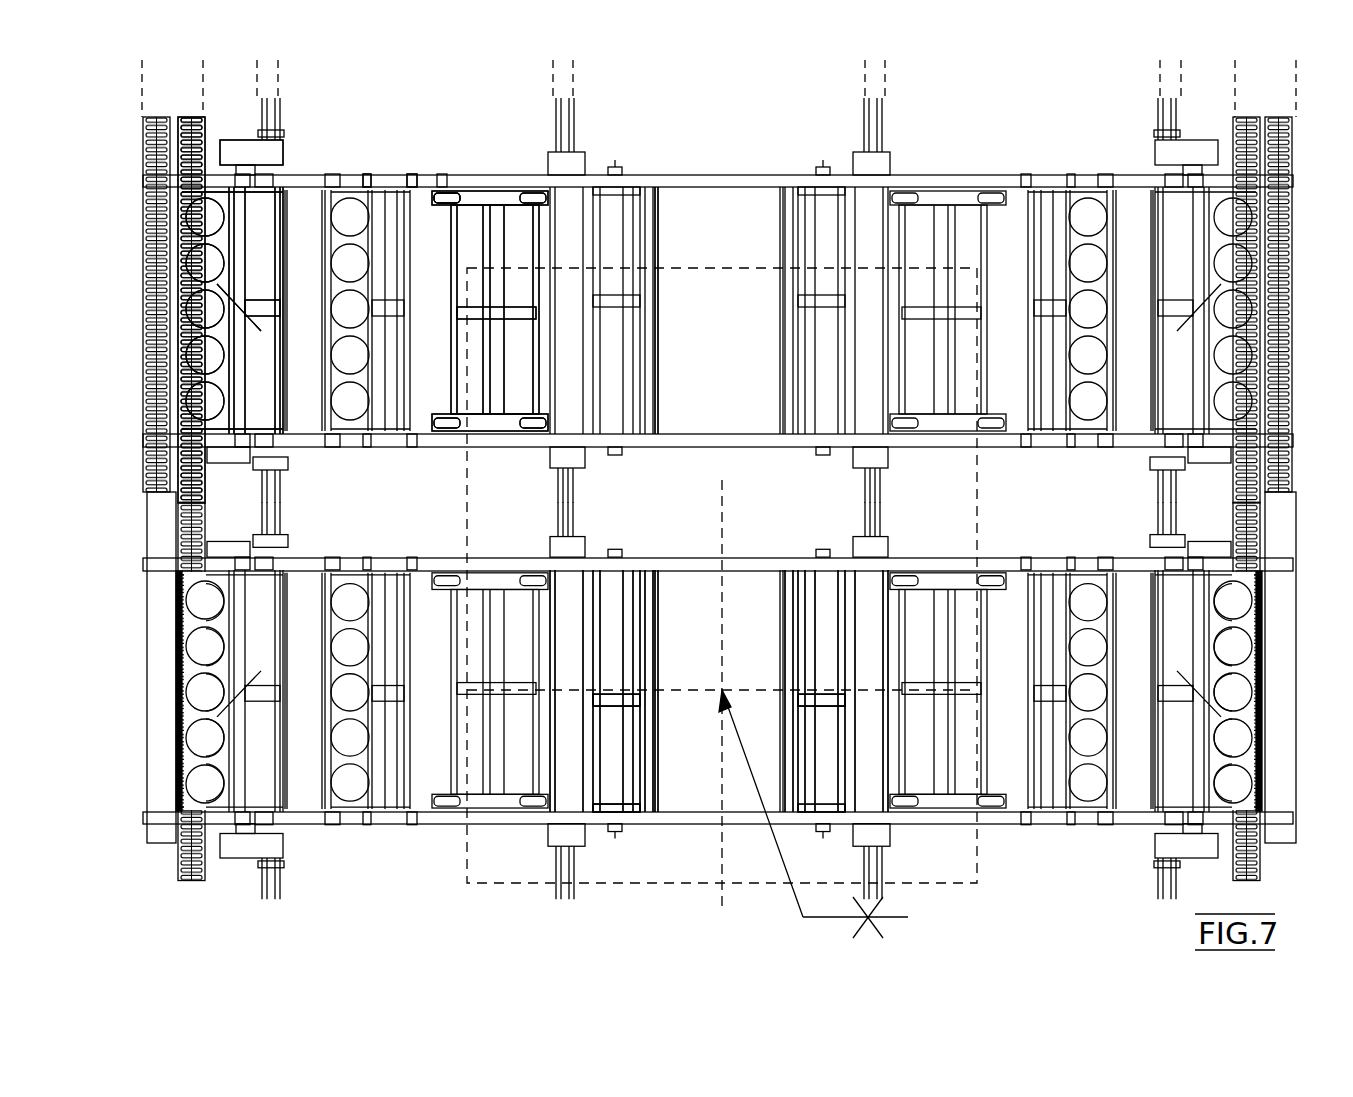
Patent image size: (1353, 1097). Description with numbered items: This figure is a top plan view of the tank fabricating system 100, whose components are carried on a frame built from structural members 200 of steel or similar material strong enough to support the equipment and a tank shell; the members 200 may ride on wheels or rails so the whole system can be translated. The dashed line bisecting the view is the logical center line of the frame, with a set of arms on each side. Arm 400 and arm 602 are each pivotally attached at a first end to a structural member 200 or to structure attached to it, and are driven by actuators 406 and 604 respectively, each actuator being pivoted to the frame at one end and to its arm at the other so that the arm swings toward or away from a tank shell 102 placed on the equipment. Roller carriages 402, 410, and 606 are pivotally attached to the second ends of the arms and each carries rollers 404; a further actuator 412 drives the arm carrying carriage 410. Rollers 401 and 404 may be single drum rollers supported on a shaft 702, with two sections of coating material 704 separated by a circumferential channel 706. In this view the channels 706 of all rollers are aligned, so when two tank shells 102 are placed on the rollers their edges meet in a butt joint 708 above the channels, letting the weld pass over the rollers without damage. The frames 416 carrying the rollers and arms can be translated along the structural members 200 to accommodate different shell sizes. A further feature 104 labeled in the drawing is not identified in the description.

The tank fabricating system 100 is at (1207, 75).
The tank shell 102 is at (630, 883).
The reference axis 104 is at (803, 917).
The structural member 200 is at (745, 175).
The arm 400 is at (546, 176).
The roller 401 is at (622, 585).
The roller carriage 402 is at (939, 200).
The roller 404 is at (262, 273).
The actuator 406 is at (448, 176).
The roller carriage 410 is at (390, 175).
The actuator 412 is at (437, 176).
The frame 416 is at (683, 180).
The arm 602 is at (200, 193).
The actuator 604 is at (282, 176).
The roller carriage 606 is at (250, 172).
The shaft 702 is at (622, 585).
The coating material 704 is at (817, 662).
The circumferential channel 706 is at (818, 687).
The butt joint 708 is at (690, 690).